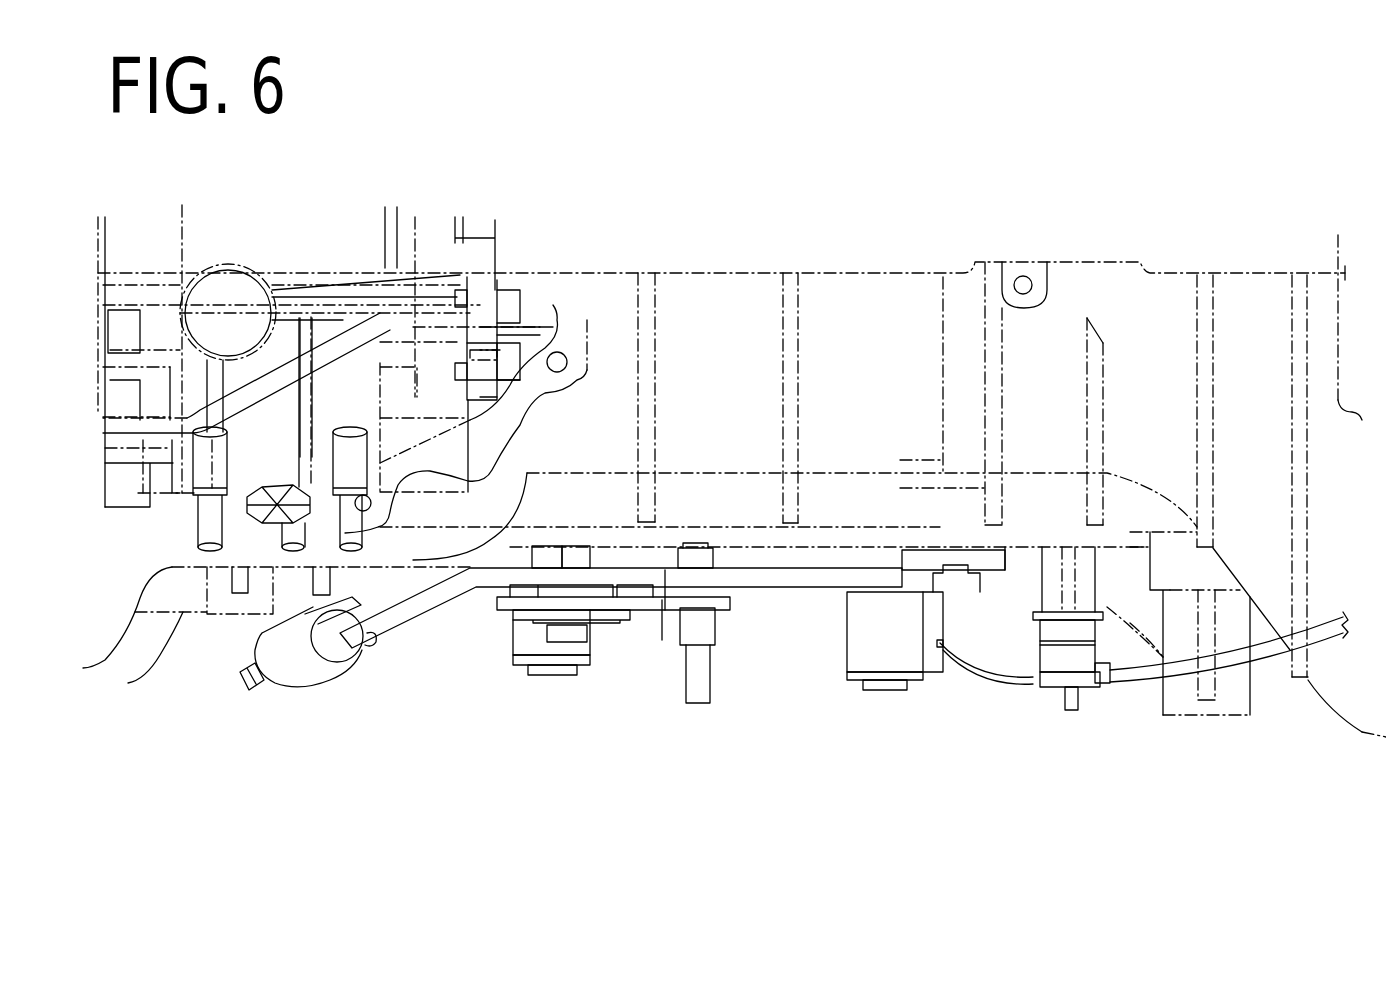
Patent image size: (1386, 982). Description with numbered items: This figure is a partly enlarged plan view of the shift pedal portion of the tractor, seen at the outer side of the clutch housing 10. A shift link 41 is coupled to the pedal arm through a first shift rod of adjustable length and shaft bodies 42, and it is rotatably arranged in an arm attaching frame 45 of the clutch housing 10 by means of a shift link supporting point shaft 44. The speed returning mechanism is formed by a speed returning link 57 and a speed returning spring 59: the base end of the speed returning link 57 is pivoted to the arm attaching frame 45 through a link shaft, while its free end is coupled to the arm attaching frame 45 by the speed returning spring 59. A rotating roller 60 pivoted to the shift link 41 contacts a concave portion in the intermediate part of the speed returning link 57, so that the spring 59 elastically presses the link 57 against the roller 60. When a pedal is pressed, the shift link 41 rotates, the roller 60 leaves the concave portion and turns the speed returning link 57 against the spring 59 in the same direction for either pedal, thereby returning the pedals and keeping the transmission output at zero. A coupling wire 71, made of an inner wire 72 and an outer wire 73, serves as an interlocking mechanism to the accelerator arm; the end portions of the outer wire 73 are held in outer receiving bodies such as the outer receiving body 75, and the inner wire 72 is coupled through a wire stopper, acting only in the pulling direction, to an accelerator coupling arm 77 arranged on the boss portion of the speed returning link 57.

The clutch housing 10 is at (847, 298).
The rotating roller 60 is at (665, 568).
The speed returning link 57 is at (430, 598).
The speed returning spring 59 is at (330, 673).
The arm attaching frame 45 is at (250, 680).
The shift link supporting point shaft 44 is at (552, 675).
The shift link 41 is at (662, 640).
The shaft bodies 42 is at (705, 630).
The accelerator coupling arm 77 is at (933, 662).
The inner wire 72 is at (1012, 677).
The outer receiving body 75 is at (1072, 710).
The outer wire 73 is at (1140, 672).
The coupling wire 71 is at (1277, 672).